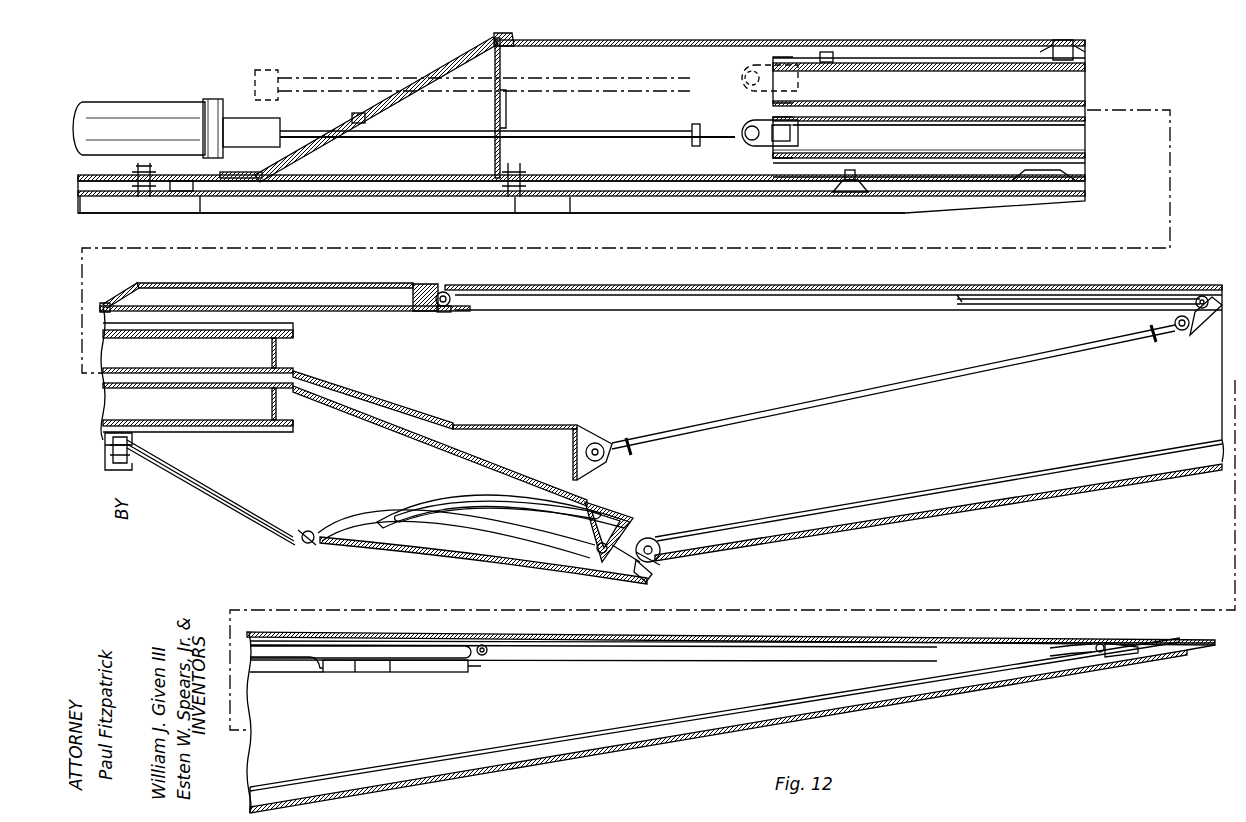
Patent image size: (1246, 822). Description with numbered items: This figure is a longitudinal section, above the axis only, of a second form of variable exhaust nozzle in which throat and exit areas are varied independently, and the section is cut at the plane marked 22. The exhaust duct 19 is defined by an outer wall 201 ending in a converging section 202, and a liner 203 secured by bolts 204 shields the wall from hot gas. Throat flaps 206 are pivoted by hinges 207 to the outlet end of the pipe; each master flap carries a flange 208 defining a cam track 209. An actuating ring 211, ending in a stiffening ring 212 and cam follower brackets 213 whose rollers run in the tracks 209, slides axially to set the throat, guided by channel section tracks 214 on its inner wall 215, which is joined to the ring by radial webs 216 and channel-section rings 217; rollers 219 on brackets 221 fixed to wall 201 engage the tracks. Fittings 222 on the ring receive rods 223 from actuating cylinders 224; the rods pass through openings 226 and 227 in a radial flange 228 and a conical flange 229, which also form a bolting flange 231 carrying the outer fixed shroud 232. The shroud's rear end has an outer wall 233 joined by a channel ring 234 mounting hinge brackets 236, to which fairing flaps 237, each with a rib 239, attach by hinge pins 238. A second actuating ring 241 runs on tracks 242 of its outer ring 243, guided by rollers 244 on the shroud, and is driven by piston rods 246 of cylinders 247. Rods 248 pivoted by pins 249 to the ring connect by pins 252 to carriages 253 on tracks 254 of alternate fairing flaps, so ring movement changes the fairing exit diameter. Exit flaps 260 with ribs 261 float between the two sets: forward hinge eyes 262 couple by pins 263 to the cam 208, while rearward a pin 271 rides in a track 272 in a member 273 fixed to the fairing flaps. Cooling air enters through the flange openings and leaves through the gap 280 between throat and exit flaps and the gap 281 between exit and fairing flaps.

The exhaust duct 19 is at (420, 177).
The panel 22 is at (945, 284).
The outer wall 201 is at (648, 178).
The converging section 202 is at (248, 505).
The liner 203 is at (312, 196).
The bolts 204 is at (142, 197).
The throat flaps 206 is at (452, 556).
The hinges 207 is at (308, 548).
The flange 208 is at (435, 530).
The cam track 209 is at (465, 495).
The actuating ring 211 is at (878, 120).
The stiffening ring 212 is at (615, 512).
The cam follower brackets 213 is at (632, 518).
The channel section tracks 214 is at (978, 165).
The inner wall 215 is at (962, 153).
The radial webs 216 is at (1075, 137).
The channel-section rings 217 is at (820, 121).
The rollers 219 is at (1080, 166).
The brackets 221 is at (842, 196).
The fittings 222 is at (748, 146).
The rods 223 is at (480, 135).
The actuating cylinders 224 is at (146, 102).
The opening 226 is at (505, 128).
The opening 227 is at (355, 116).
The radial flange 228 is at (500, 72).
The conical flange 229 is at (440, 68).
The bolting flange 231 is at (493, 36).
The outer fixed shroud 232 is at (690, 42).
The outer wall 233 is at (200, 284).
The channel ring 234 is at (416, 290).
The hinge brackets 236 is at (440, 292).
The fairing flaps 237 is at (752, 286).
The hinge pins 238 is at (446, 312).
The rib 239 is at (680, 298).
The actuating ring 241 is at (1072, 103).
The tracks 242 is at (930, 63).
The outer ring 243 is at (1075, 70).
The rollers 244 is at (1075, 55).
The piston rods 246 is at (660, 92).
The actuating cylinders 247 is at (258, 80).
The rods 248 is at (880, 400).
The pins 249 is at (605, 444).
The pins 252 is at (1178, 331).
The carriages 253 is at (1205, 315).
The tracks 254 is at (1085, 303).
The exit flaps 260 is at (1020, 505).
The ribs 261 is at (975, 482).
The hinge eyes 262 is at (656, 540).
The pins 263 is at (662, 556).
The pin 271 is at (1100, 653).
The track 272 is at (1075, 652).
The member 273 is at (1145, 650).
The gap 280 is at (650, 578).
The gap 281 is at (1186, 653).